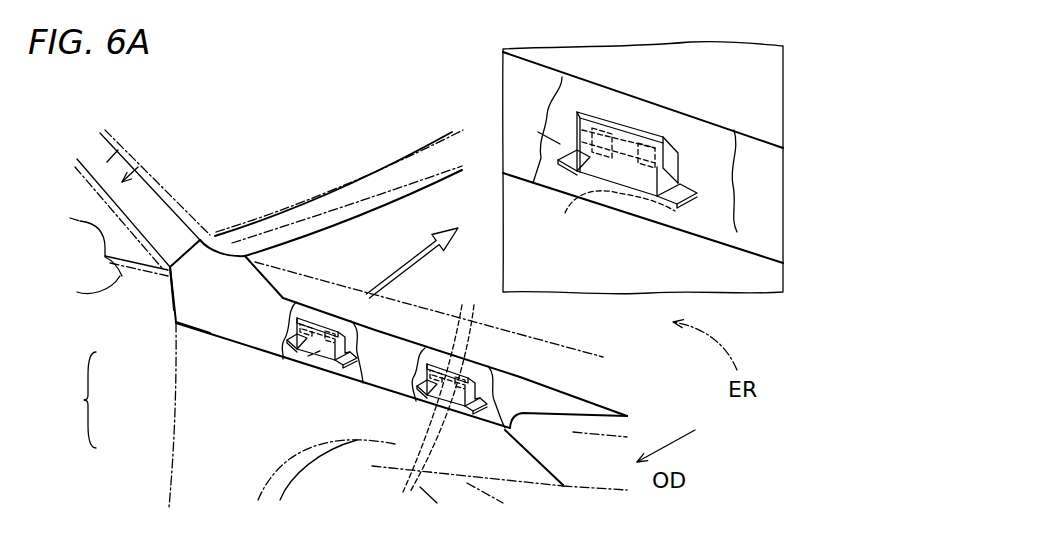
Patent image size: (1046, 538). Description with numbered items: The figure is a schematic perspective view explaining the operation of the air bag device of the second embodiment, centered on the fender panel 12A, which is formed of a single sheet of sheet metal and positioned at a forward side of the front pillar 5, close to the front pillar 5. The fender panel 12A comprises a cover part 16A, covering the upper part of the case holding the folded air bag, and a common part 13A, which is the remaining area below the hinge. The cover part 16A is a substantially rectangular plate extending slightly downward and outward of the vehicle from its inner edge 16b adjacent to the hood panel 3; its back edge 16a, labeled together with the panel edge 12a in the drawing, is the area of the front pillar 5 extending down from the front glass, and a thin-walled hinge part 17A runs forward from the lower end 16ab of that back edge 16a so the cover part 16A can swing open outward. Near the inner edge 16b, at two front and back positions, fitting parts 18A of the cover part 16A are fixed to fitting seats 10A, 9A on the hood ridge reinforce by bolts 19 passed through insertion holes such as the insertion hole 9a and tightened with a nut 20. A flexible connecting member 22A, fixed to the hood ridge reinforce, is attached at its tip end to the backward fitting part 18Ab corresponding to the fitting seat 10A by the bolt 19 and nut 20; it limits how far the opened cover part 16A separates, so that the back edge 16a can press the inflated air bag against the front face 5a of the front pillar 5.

The front pillar 5 is at (139, 166).
The front face 5a is at (110, 158).
The side sill upper portion 12a is at (218, 229).
The back edge 16a is at (186, 250).
The lower end 16ab is at (181, 326).
The inner edge 16b is at (405, 334).
The hinge part 17A is at (230, 344).
The fender panel 12A is at (111, 387).
The cover part 16A is at (174, 311).
The common part 13A is at (184, 380).
The fitting parts 18A is at (478, 375).
The fitting part 18Ab is at (352, 322).
The bolt 19 is at (590, 36).
The nut 20 is at (620, 207).
The flexible connecting member 22A is at (305, 365).
The fitting seat 10A is at (346, 350).
The insertion hole 9a is at (441, 502).
The fitting seat 9A is at (491, 423).
The hood panel 3 is at (647, 330).